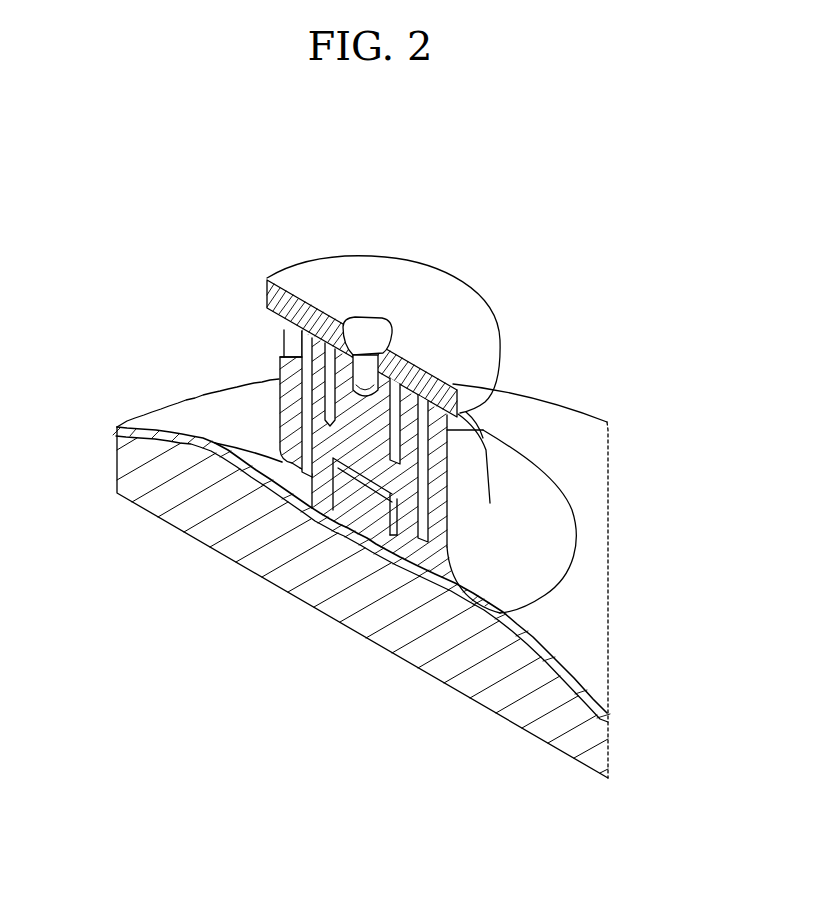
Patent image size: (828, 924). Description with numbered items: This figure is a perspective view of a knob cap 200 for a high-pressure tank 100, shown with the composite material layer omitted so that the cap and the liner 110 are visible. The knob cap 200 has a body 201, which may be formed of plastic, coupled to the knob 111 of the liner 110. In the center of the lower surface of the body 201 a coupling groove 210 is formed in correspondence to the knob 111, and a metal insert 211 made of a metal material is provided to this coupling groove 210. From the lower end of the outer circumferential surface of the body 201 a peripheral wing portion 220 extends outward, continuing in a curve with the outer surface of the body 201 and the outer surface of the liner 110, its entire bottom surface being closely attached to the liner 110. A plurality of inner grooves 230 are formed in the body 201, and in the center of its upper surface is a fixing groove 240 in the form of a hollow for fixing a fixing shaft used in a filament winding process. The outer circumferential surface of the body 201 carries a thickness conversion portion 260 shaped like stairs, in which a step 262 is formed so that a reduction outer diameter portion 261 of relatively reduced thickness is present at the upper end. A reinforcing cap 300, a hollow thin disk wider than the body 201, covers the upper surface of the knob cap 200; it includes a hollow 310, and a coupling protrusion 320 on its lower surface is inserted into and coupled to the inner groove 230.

The high-pressure tank 100 is at (172, 533).
The liner 110 is at (165, 432).
The knob 111 is at (365, 532).
The knob cap 200 is at (272, 410).
The body 201 is at (448, 487).
The coupling groove 210 is at (300, 497).
The metal insert 211 is at (413, 515).
The peripheral wing portion 220 is at (503, 586).
The inner groove 230 is at (483, 436).
The fixing groove 240 is at (331, 323).
The thickness conversion portion 260 is at (196, 283).
The reduction outer diameter portion 261 is at (293, 354).
The step 262 is at (286, 357).
The reinforcing cap 300 is at (472, 270).
The hollow 310 is at (368, 328).
The coupling protrusion 320 is at (497, 403).